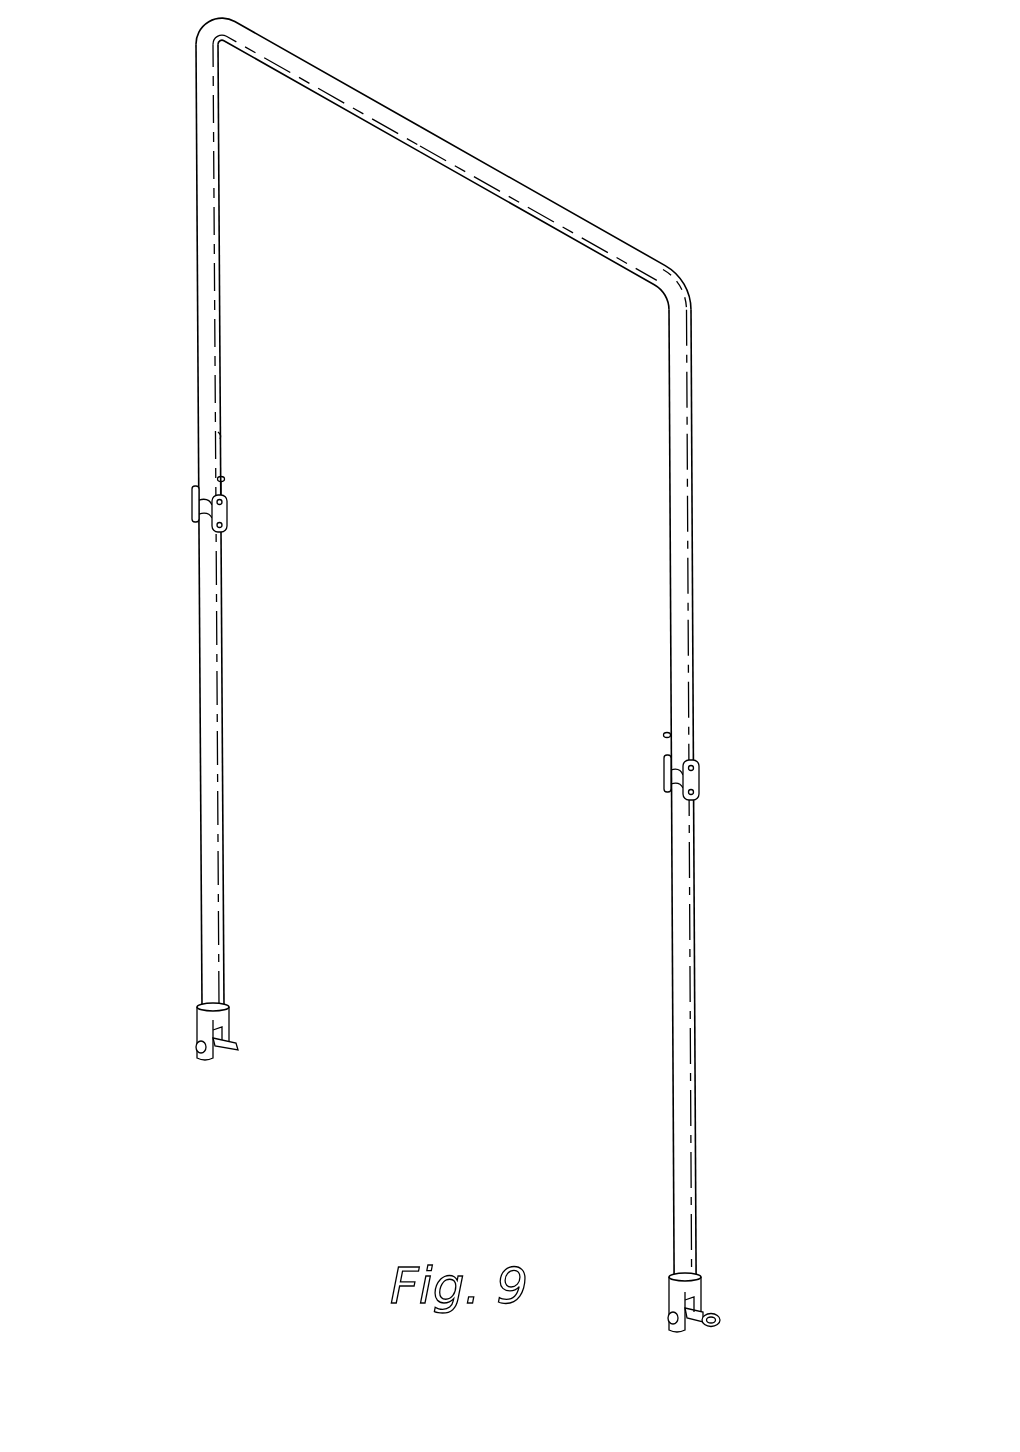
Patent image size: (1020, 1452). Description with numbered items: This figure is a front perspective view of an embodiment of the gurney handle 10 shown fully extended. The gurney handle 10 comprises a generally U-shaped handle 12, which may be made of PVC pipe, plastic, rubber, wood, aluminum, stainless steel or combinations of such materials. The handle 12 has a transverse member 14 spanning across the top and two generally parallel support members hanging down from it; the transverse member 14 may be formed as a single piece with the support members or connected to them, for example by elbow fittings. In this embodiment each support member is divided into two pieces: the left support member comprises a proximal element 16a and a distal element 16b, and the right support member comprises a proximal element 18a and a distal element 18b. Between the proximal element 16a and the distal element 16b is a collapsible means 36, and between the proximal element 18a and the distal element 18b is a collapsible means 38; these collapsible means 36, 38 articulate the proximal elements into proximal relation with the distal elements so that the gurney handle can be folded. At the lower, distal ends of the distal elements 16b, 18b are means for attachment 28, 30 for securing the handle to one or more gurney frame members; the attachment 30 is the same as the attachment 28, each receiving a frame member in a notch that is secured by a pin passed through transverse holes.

The gurney handle 10 is at (457, 675).
The handle 12 is at (337, 78).
The transverse member 14 is at (495, 168).
The proximal element 16a is at (197, 343).
The distal element 16b is at (200, 667).
The proximal element 18a is at (698, 430).
The distal element 18b is at (695, 911).
The collapsible means 36 is at (243, 425).
The collapsible means 38 is at (717, 693).
The means for attachment 28 is at (178, 1000).
The means for attachment 30 is at (728, 1268).